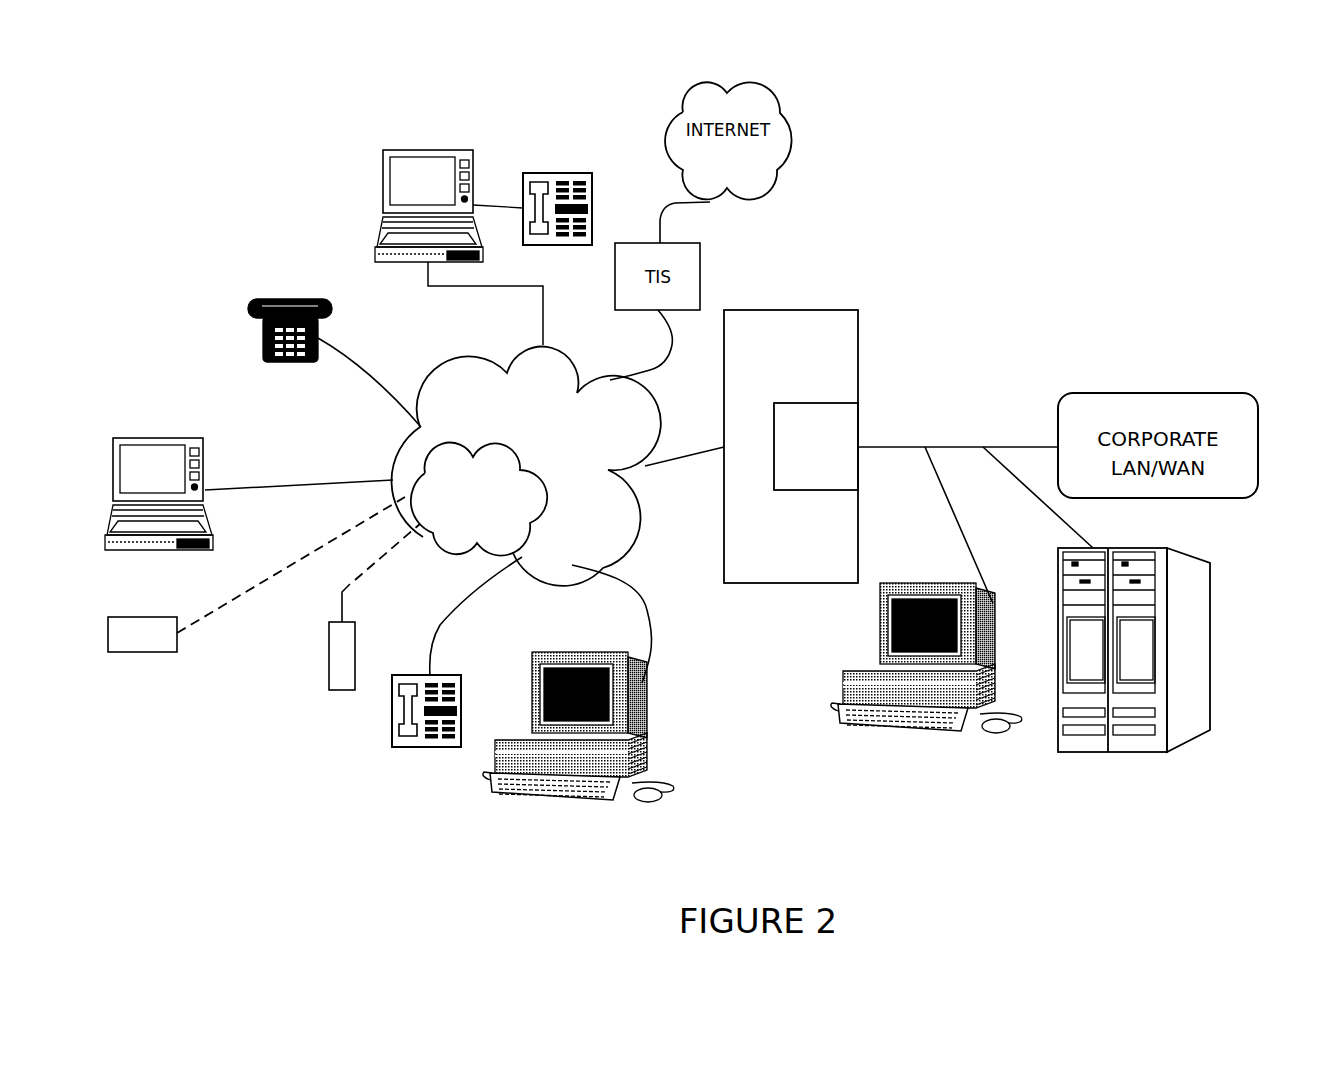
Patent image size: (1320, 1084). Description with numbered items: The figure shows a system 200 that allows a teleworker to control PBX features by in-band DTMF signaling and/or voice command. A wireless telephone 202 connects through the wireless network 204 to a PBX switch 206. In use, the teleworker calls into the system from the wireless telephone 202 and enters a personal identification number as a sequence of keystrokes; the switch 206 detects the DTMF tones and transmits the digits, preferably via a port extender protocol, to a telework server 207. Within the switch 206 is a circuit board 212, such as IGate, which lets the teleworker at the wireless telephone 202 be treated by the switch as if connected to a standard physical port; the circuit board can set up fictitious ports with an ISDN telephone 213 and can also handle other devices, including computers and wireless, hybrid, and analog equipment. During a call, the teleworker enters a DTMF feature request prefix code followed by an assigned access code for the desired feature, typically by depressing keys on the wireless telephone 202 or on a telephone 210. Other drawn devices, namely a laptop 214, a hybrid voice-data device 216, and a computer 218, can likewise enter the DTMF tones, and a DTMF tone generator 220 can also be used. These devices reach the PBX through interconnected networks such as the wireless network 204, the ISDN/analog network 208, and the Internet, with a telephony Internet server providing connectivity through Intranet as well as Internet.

The system 200 is at (1042, 326).
The wireless telephone 202 is at (345, 690).
The wireless network 204 is at (461, 536).
The PBX switch 206 is at (816, 354).
The telework server 207 is at (1207, 570).
The ISDN/analog network 208 is at (556, 454).
The telephone 210 is at (263, 326).
The circuit board 212 is at (832, 458).
The ISDN telephone 213 is at (392, 745).
The laptop 214 is at (158, 437).
The hybrid voice-data device 216 is at (358, 143).
The computer 218 is at (490, 777).
The DTMF tone generator 220 is at (157, 646).